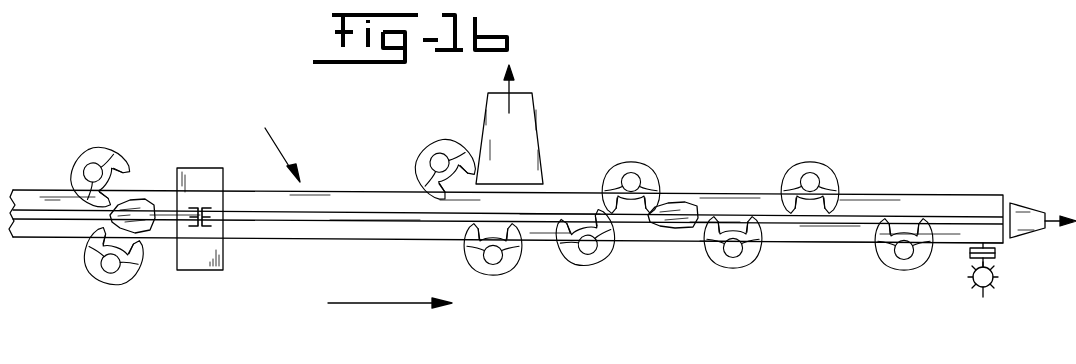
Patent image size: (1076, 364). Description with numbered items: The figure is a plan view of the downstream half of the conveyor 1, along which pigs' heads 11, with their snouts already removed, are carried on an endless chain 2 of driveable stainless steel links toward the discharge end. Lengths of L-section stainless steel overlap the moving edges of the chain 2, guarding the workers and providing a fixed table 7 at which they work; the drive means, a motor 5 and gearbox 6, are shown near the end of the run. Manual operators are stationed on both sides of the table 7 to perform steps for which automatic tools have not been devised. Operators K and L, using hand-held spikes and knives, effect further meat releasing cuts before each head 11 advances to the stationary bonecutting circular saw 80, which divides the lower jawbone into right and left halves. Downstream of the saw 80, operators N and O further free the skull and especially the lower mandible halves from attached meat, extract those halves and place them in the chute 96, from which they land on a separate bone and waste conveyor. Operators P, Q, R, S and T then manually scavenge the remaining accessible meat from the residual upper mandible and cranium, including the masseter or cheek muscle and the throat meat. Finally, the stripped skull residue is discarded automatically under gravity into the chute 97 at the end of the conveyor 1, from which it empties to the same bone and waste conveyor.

The conveyor 1 is at (276, 143).
The endless chain 2 is at (780, 220).
The motor 5 is at (998, 278).
The gearbox 6 is at (998, 252).
The table 7 is at (820, 243).
The pig's head 11 is at (147, 235).
The bonecutting circular saw 80 is at (203, 168).
The chute 96 is at (541, 145).
The chute 97 is at (1030, 210).
The operator K is at (92, 148).
The operator L is at (113, 283).
The operator N is at (428, 141).
The operator O is at (490, 276).
The operator P is at (591, 268).
The operator Q is at (627, 163).
The operator R is at (733, 270).
The operator S is at (808, 163).
The operator T is at (901, 276).